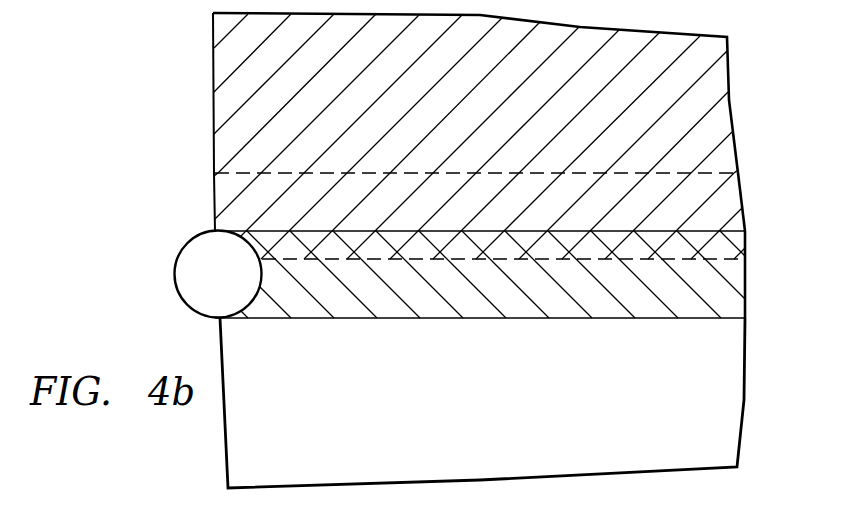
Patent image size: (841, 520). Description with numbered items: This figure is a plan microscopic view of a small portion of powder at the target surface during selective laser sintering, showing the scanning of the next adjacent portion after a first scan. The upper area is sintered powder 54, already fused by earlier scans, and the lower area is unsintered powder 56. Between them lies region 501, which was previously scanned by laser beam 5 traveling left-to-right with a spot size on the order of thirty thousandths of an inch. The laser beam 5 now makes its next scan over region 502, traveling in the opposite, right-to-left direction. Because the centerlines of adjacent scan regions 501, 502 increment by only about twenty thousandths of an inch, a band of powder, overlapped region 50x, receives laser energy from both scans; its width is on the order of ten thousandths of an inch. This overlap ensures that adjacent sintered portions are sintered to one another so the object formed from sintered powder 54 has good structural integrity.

The laser beam 5 is at (146, 273).
The sintered powder 54 is at (478, 108).
The first scan region 501 is at (478, 216).
The overlapped region 50x is at (752, 232).
The second scan region 502 is at (402, 288).
The unsintered powder 56 is at (478, 408).